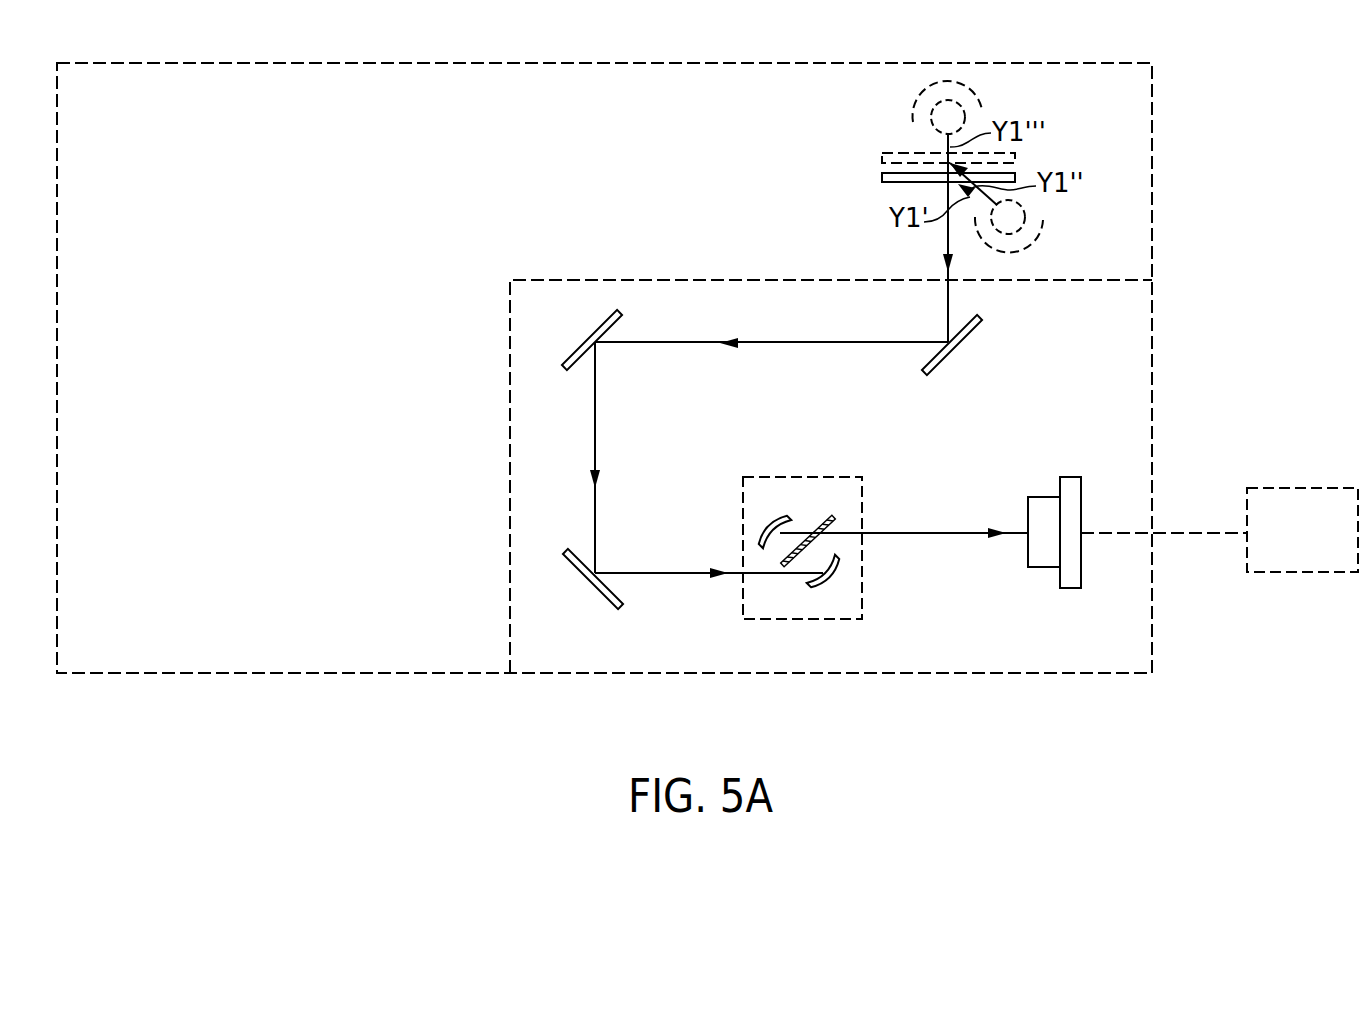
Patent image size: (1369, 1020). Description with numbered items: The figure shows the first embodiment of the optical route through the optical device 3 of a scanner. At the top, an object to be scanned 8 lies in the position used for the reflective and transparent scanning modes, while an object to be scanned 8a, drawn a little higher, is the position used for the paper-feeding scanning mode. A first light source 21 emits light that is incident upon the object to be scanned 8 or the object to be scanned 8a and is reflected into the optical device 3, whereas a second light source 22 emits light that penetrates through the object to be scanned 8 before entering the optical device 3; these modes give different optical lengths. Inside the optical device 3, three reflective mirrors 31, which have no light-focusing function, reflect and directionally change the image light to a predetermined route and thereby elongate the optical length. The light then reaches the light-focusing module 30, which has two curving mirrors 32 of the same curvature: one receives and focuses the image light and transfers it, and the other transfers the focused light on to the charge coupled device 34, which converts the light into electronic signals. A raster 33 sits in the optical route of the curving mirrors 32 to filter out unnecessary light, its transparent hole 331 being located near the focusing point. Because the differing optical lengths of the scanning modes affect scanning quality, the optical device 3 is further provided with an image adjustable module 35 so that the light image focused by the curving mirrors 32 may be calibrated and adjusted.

The optical device 3 is at (510, 487).
The object to be scanned 8 is at (882, 177).
The object to be scanned 8a is at (890, 153).
The first light source 21 is at (1043, 236).
The second light source 22 is at (982, 108).
The light-focusing module 30 is at (838, 620).
The reflective mirror 31 is at (977, 331).
The curving mirror 32 is at (762, 536).
The raster 33 is at (833, 522).
The transparent hole 331 is at (818, 526).
The charge coupled device 34 is at (1072, 580).
The image adjustable module 35 is at (1328, 500).